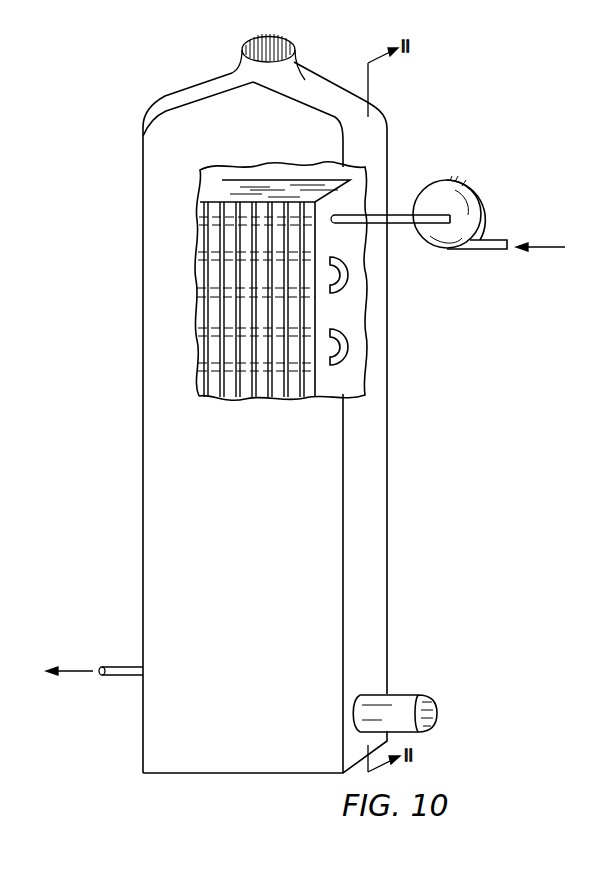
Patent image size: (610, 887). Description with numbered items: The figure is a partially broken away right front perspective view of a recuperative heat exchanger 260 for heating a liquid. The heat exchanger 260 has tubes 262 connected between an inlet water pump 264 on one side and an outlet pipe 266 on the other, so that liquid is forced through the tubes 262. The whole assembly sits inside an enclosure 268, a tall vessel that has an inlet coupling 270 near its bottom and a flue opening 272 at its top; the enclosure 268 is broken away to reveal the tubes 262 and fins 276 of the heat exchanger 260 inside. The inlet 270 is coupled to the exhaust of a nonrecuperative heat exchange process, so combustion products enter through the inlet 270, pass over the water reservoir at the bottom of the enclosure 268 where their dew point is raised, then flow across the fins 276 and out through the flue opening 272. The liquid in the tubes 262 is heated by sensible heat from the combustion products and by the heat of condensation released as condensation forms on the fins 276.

The recuperative heat exchanger 260 is at (346, 374).
The tubes 262 is at (354, 350).
The inlet water pump 264 is at (470, 228).
The outlet pipe 266 is at (120, 678).
The enclosure 268 is at (395, 131).
The inlet coupling 270 is at (401, 697).
The flue opening 272 is at (262, 36).
The fins 276 is at (197, 353).